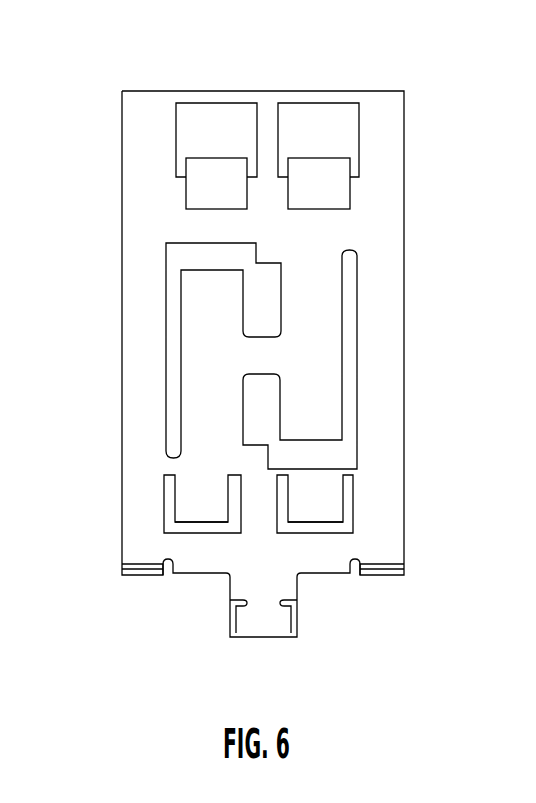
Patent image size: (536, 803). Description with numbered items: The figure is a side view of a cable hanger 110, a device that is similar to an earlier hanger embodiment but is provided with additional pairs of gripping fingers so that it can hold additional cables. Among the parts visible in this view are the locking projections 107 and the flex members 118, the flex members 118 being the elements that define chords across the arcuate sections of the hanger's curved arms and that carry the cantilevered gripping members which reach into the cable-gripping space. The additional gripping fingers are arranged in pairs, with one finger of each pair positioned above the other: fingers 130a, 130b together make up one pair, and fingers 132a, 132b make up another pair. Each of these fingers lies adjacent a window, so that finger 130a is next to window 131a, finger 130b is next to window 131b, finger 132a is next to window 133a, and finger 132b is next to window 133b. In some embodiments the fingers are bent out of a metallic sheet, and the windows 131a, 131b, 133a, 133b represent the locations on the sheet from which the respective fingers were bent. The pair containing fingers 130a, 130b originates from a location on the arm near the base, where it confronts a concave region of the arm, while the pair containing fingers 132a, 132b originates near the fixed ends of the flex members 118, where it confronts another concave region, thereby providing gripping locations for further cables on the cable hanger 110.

The cable hanger 110 is at (470, 117).
The locking projections 107 is at (262, 621).
The flex members 118 is at (318, 352).
The gripping finger 130a is at (212, 185).
The gripping finger 130b is at (320, 185).
The window 131a is at (198, 103).
The window 131b is at (344, 103).
The gripping finger 132a is at (195, 499).
The gripping finger 132b is at (317, 499).
The window 133a is at (201, 537).
The window 133b is at (310, 537).